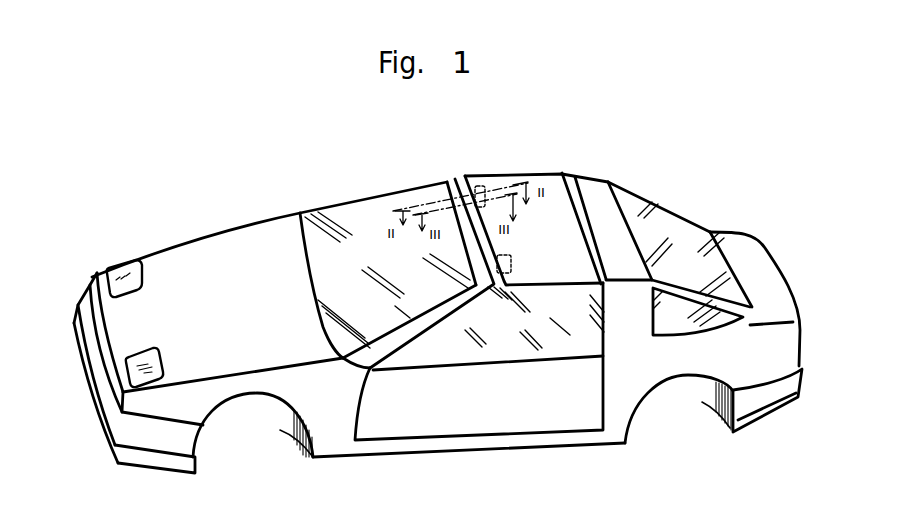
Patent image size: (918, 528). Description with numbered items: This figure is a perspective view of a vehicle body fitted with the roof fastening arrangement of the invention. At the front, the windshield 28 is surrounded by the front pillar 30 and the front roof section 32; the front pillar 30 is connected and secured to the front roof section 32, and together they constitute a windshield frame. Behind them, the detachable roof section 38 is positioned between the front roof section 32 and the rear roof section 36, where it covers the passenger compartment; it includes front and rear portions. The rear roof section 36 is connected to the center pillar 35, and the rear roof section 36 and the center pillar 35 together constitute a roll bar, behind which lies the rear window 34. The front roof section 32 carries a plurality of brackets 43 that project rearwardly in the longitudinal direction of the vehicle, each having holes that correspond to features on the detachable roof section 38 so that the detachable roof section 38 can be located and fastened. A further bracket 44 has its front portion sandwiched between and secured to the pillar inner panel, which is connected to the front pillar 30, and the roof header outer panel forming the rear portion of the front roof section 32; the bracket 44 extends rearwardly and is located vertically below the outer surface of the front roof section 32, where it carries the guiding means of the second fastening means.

The windshield 28 is at (343, 210).
The front pillar 30 is at (400, 342).
The front roof section 32 is at (458, 182).
The rear window 34 is at (710, 232).
The center pillar 35 is at (632, 327).
The rear roof section 36 is at (603, 190).
The detachable roof section 38 is at (550, 183).
The bracket 43 is at (463, 178).
The bracket 44 is at (503, 287).